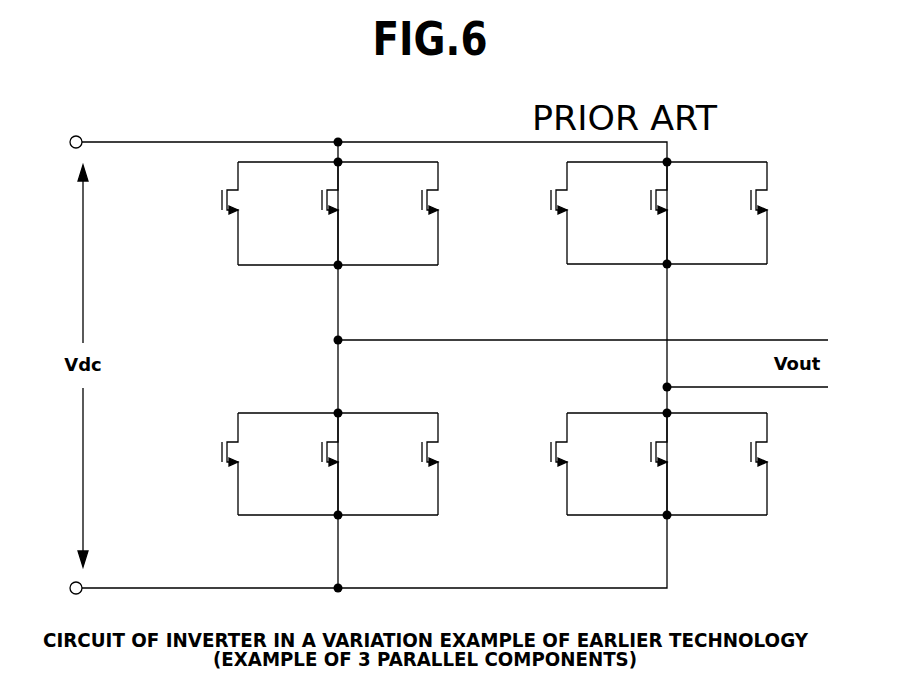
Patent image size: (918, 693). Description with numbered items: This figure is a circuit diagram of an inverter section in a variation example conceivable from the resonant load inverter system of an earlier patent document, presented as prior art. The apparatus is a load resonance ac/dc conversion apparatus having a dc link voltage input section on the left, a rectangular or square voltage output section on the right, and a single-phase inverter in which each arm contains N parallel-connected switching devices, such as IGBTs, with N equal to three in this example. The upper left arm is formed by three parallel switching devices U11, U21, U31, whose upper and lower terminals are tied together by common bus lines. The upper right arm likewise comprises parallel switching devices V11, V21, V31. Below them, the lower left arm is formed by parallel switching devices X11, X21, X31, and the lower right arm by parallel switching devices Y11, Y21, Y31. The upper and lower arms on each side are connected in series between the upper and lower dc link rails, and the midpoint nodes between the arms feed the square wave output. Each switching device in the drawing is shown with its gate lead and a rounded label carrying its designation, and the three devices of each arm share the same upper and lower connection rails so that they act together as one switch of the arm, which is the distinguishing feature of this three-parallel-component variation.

The switching device U11 is at (222, 200).
The switching device U21 is at (322, 200).
The switching device U31 is at (422, 200).
The switching device V11 is at (551, 200).
The switching device V21 is at (651, 200).
The switching device V31 is at (751, 200).
The switching device X11 is at (222, 452).
The switching device X21 is at (322, 452).
The switching device X31 is at (422, 452).
The switching device Y11 is at (551, 452).
The switching device Y21 is at (651, 452).
The switching device Y31 is at (751, 452).